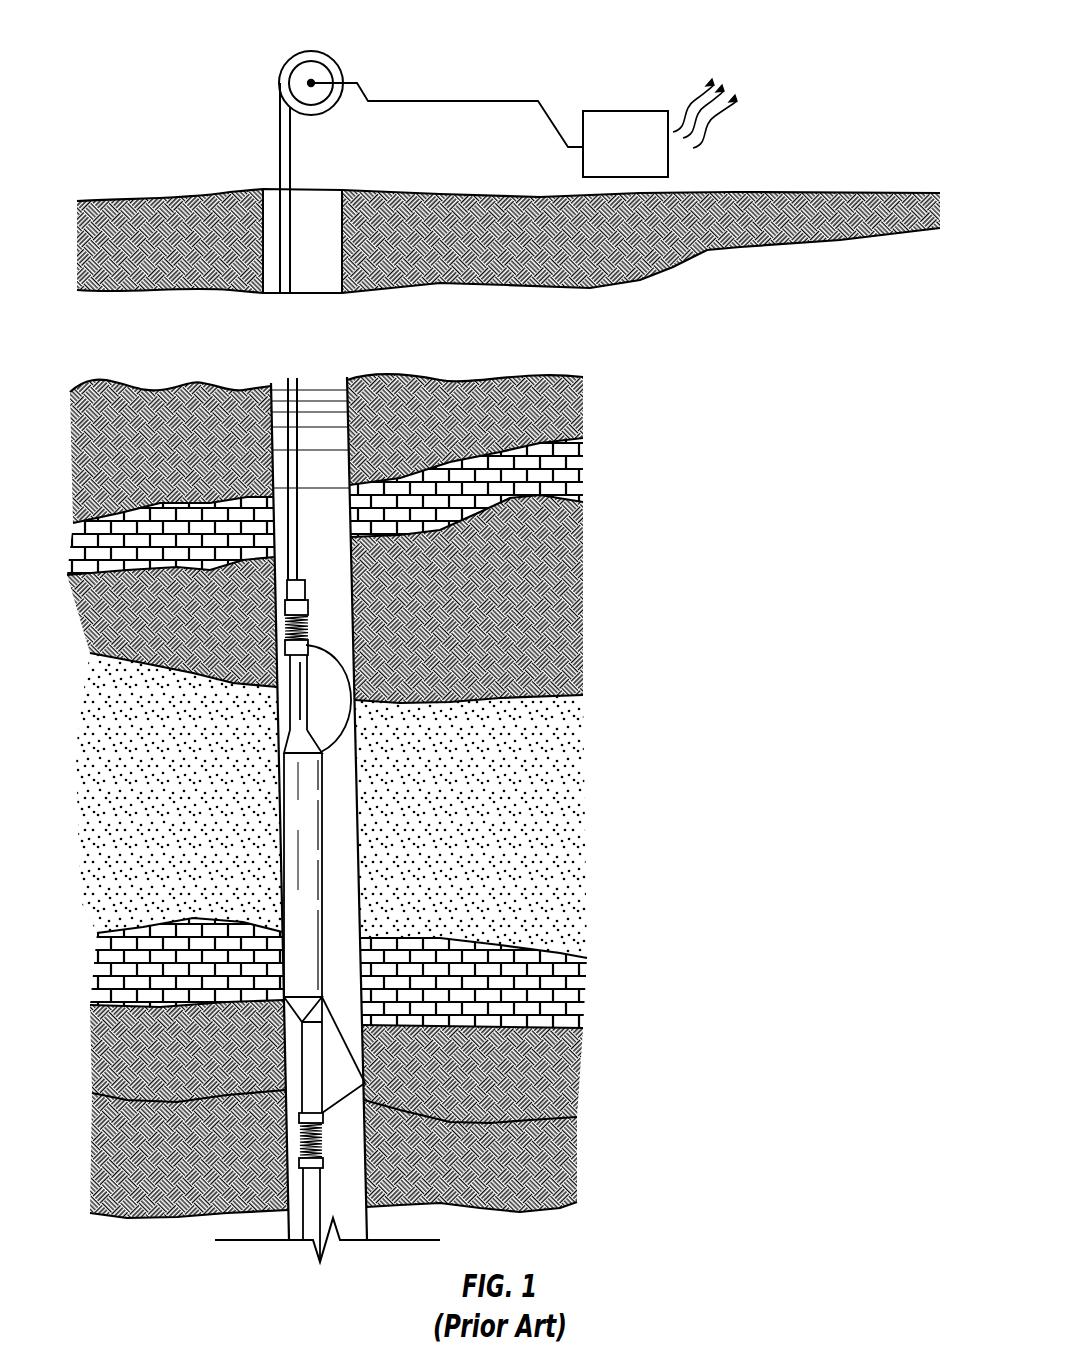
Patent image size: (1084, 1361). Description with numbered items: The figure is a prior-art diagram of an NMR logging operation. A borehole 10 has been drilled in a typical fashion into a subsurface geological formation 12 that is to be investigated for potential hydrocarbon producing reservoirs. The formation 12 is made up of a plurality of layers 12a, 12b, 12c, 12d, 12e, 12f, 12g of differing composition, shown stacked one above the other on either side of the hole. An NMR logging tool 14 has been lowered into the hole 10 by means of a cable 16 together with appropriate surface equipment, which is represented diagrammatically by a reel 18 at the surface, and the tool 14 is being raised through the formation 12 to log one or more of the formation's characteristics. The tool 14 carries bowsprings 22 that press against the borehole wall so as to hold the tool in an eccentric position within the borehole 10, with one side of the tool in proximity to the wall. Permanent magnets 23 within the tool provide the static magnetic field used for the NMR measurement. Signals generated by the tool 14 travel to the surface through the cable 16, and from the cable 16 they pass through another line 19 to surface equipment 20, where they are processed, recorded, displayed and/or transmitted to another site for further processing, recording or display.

The borehole 10 is at (329, 251).
The subsurface geological formation 12 is at (384, 807).
The formation layer 12a is at (557, 415).
The formation layer 12b is at (570, 470).
The formation layer 12c is at (542, 600).
The formation layer 12d is at (540, 797).
The formation layer 12e is at (553, 997).
The formation layer 12f is at (567, 1070).
The formation layer 12g is at (563, 1165).
The NMR logging tool 14 is at (285, 997).
The cable 16 is at (280, 156).
The reel 18 is at (318, 51).
The line 19 is at (447, 100).
The surface equipment 20 is at (613, 110).
The bowsprings 22 is at (347, 730).
The permanent magnets 23 is at (322, 853).